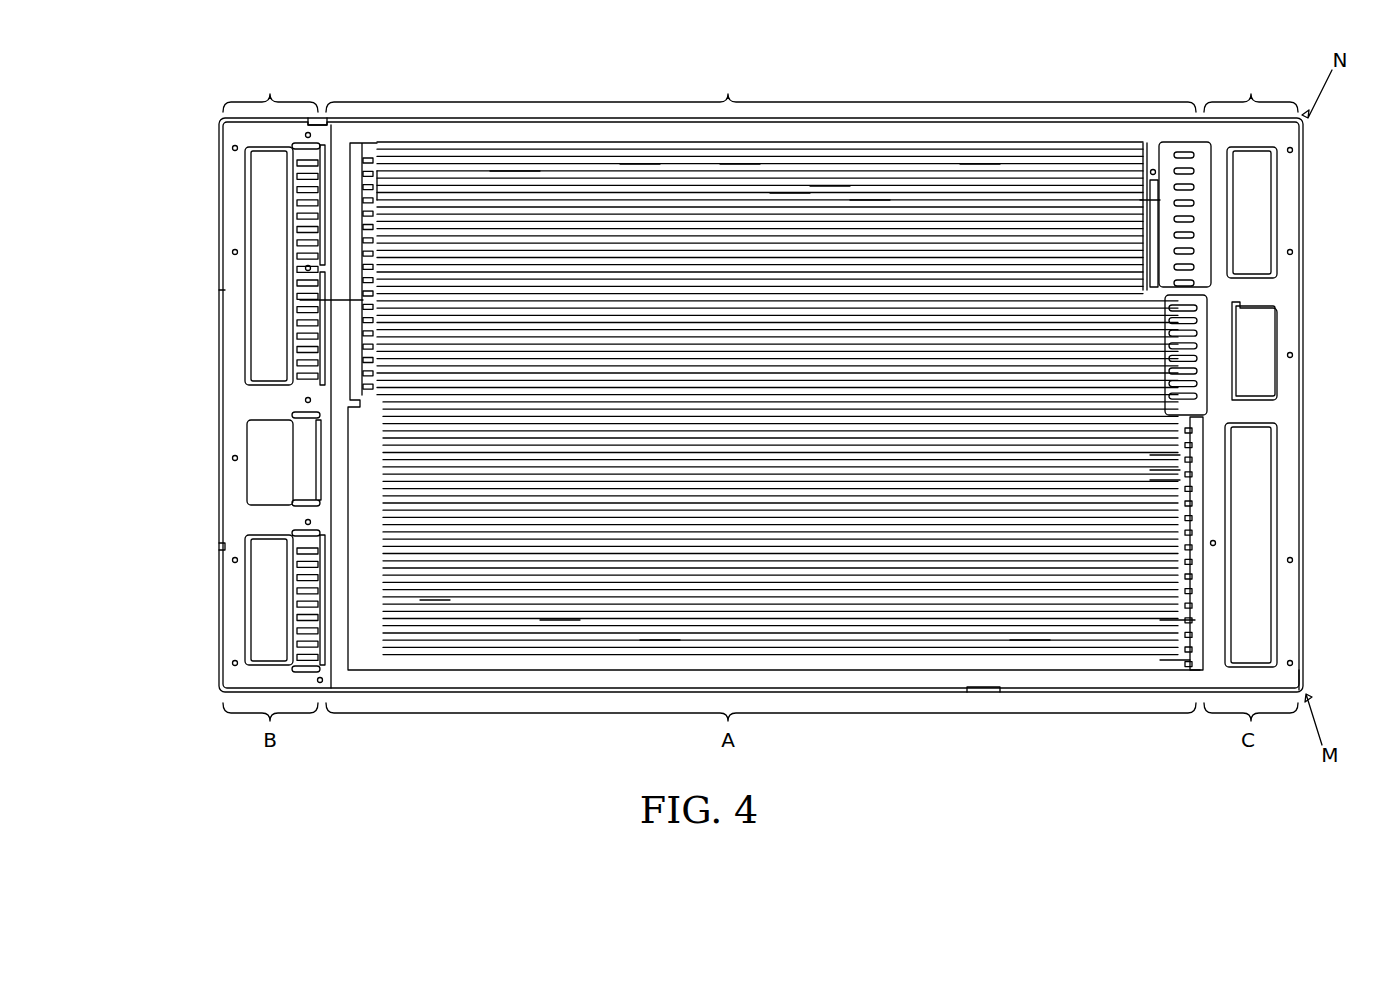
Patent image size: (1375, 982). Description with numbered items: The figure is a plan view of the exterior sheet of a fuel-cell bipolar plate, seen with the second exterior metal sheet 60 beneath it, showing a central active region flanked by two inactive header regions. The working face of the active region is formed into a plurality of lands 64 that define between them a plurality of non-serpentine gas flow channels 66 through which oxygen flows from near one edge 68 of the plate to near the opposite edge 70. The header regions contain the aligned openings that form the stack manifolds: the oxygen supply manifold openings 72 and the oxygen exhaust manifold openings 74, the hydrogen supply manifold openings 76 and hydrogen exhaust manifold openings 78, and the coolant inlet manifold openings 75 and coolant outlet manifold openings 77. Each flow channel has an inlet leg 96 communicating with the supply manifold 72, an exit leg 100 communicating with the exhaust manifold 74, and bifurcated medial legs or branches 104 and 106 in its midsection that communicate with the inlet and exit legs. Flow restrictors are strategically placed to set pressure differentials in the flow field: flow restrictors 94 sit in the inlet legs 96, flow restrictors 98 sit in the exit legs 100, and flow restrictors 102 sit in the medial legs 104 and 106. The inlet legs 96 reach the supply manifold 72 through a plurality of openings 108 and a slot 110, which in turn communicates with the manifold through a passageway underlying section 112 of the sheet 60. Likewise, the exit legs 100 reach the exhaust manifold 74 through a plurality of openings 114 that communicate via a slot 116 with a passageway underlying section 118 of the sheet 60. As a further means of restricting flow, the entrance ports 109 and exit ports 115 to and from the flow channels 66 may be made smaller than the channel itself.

The second exterior metal sheet 60 is at (1100, 118).
The lands 64 is at (1035, 164).
The gas flow channels 66 is at (975, 164).
The edge 68 is at (222, 290).
The opposite edge 70 is at (1308, 345).
The openings forming oxygen supply manifold 72 is at (265, 215).
The openings forming oxygen exhaust manifold 74 is at (1250, 545).
The openings forming coolant inlet manifold 75 is at (1250, 320).
The openings forming hydrogen supply manifold 76 is at (1255, 195).
The openings forming coolant outlet manifold 77 is at (262, 455).
The openings forming hydrogen exhaust manifold 78 is at (265, 580).
The flow-restrictors in inlet legs 94 is at (392, 200).
The inlet legs 96 is at (520, 180).
The flow-restrictors in exit legs 98 is at (1180, 395).
The exit legs 100 is at (1045, 660).
The flow-restrictors in medial legs 102 is at (650, 185).
The medial leg 104 is at (740, 164).
The medial leg 106 is at (790, 193).
The openings 108 is at (380, 175).
The entrance ports 109 is at (365, 347).
The slot 110 is at (360, 150).
The section of plate 112 is at (337, 160).
The openings 114 is at (1188, 670).
The exit ports 115 is at (1160, 480).
The slot 116 is at (1195, 620).
The section of plate 118 is at (1215, 525).